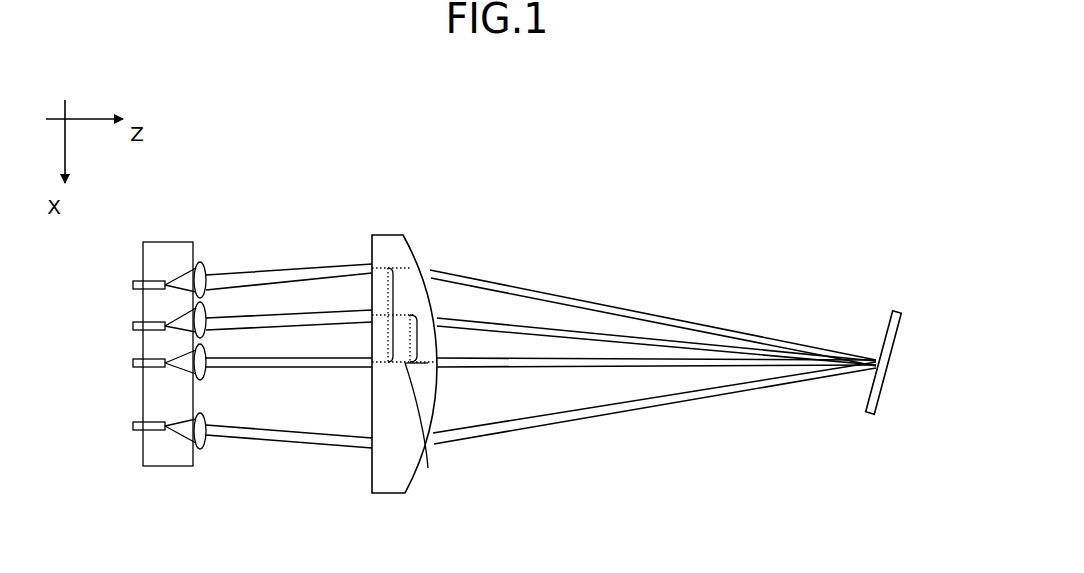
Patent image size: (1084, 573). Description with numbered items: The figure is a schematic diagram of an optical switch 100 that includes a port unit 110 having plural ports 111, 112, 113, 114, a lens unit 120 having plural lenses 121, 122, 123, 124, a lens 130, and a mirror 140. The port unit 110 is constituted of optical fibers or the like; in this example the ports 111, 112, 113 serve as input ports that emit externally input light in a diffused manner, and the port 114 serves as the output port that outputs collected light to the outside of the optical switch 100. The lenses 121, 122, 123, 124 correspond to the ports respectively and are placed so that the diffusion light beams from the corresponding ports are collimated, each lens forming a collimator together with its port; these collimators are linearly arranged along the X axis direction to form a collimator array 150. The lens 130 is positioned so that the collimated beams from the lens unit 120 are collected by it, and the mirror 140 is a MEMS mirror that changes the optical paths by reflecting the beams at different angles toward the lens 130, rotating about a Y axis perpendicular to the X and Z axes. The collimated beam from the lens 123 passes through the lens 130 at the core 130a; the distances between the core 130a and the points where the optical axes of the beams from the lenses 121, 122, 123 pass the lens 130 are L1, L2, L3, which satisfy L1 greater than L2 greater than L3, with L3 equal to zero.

The optical switch 100 is at (585, 184).
The port unit 110 is at (128, 268).
The port 111 is at (133, 285).
The port 112 is at (133, 326).
The port 113 is at (133, 366).
The port 114 is at (133, 427).
The lens unit 120 is at (200, 237).
The lens 121 is at (207, 262).
The lens 122 is at (207, 337).
The lens 123 is at (207, 380).
The lens 124 is at (207, 449).
The lens 130 is at (390, 235).
The core 130a is at (426, 468).
The mirror 140 is at (896, 312).
The collimator array 150 is at (151, 242).
The distance L1 is at (394, 296).
The distance L2 is at (418, 338).
The distance L3 is at (426, 364).